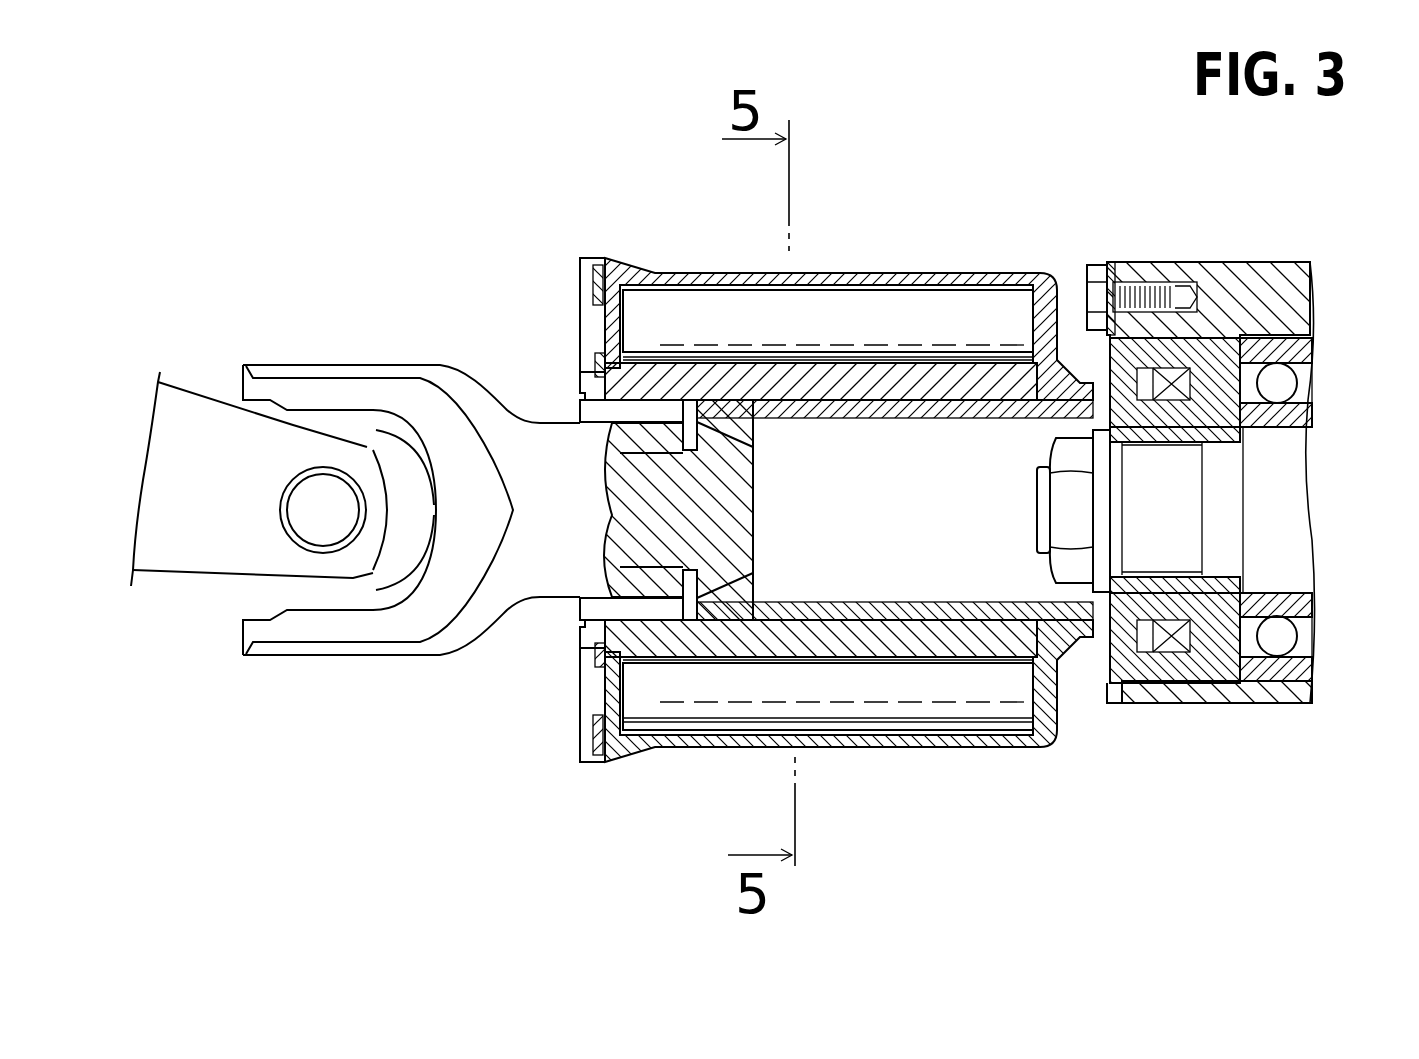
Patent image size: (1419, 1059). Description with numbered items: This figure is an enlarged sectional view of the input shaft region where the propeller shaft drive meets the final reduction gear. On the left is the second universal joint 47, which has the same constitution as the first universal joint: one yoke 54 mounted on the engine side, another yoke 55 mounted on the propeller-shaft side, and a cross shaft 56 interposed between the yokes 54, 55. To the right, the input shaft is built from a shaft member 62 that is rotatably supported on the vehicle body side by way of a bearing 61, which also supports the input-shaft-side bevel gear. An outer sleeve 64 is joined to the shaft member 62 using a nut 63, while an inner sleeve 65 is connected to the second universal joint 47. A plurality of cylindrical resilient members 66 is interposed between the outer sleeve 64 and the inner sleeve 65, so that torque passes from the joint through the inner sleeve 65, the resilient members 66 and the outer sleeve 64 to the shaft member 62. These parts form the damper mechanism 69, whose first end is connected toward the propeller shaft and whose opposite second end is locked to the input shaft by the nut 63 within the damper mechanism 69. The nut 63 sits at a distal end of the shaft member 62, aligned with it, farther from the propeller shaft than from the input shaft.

The second universal joint 47 is at (328, 320).
The yoke 54 is at (403, 365).
The yoke 55 is at (205, 390).
The cross shaft 56 is at (322, 467).
The bearing 61 is at (1280, 333).
The shaft member 62 is at (1290, 480).
The nut 63 is at (1065, 572).
The outer sleeve 64 is at (887, 271).
The inner sleeve 65 is at (929, 355).
The cylindrical resilient members 66 is at (746, 306).
The damper mechanism 69 is at (811, 231).